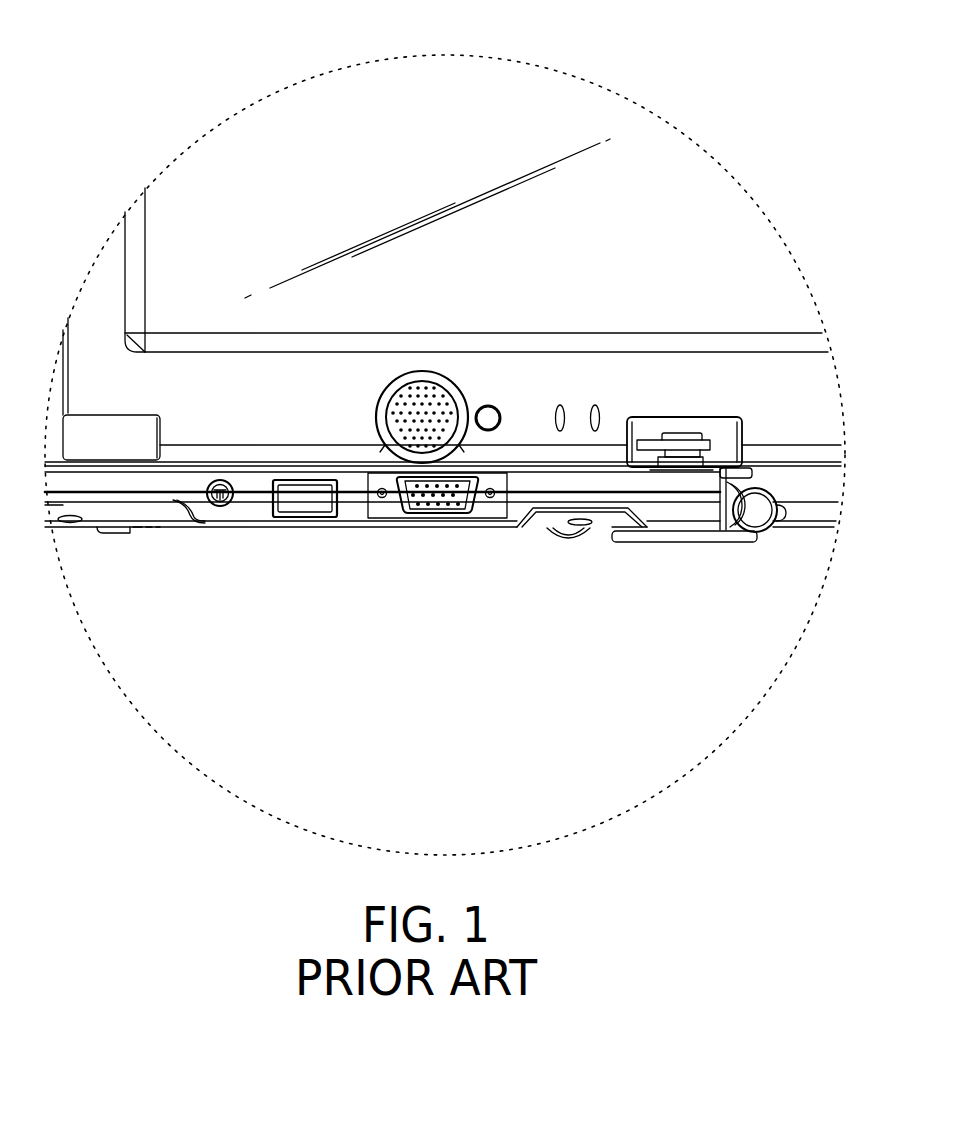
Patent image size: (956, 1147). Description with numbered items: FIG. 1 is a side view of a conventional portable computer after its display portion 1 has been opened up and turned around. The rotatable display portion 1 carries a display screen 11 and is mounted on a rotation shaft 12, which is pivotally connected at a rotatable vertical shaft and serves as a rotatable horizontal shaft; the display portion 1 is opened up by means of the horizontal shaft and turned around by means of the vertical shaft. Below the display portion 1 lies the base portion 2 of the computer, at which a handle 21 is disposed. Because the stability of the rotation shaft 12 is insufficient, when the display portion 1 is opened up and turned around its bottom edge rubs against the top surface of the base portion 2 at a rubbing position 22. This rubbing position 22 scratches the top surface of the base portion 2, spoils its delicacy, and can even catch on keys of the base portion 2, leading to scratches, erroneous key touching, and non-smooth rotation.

The display portion 1 is at (63, 373).
The display screen 11 is at (247, 158).
The rotation shaft 12 is at (681, 433).
The base portion 2 is at (50, 523).
The handle 21 is at (803, 517).
The rubbing position 22 is at (102, 463).